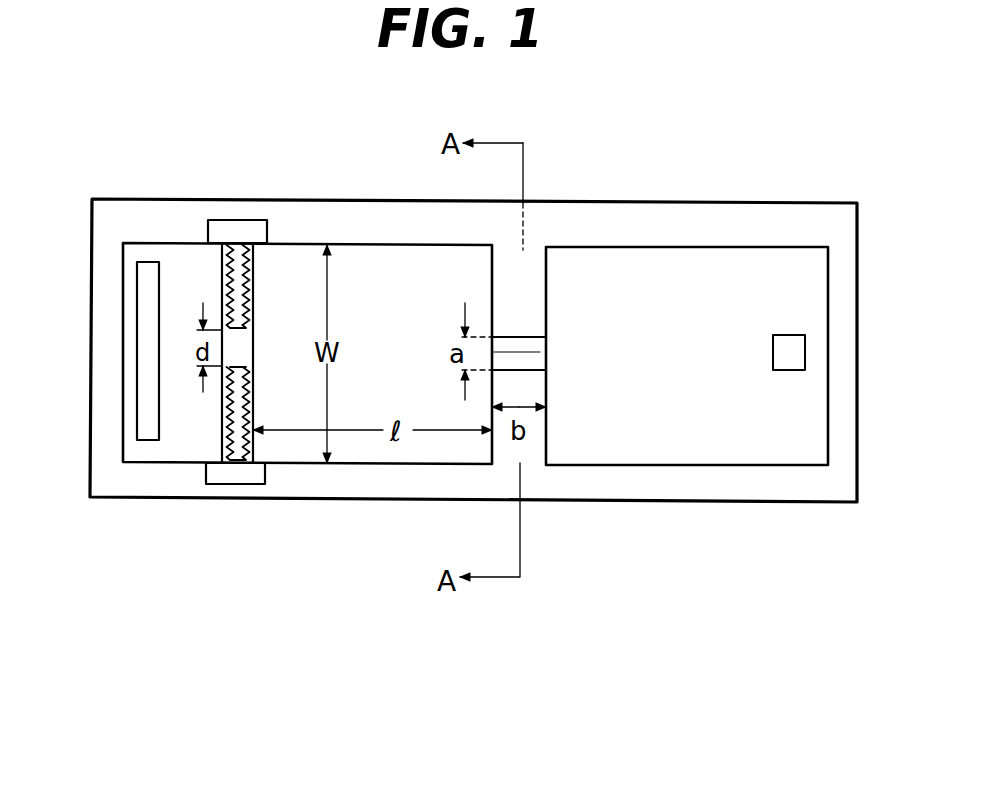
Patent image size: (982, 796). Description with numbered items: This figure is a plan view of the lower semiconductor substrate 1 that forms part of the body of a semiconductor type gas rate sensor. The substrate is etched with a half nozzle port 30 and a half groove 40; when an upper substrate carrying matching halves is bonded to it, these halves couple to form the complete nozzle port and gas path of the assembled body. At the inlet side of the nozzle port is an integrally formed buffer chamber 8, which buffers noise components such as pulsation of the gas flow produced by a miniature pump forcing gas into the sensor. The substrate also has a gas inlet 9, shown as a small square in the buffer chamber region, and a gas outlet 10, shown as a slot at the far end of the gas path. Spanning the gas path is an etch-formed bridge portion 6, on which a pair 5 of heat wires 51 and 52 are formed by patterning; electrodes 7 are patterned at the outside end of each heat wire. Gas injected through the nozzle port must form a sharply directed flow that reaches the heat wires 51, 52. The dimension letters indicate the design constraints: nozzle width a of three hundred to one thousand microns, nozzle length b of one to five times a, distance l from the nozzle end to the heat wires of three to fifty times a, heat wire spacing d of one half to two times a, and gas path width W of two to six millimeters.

The lower semiconductor substrate 1 is at (357, 503).
The pair of heat wires 5 is at (257, 341).
The bridge portion 6 is at (222, 398).
The electrodes 7 is at (238, 222).
The buffer chamber 8 is at (717, 437).
The gas inlet 9 is at (805, 355).
The gas outlet 10 is at (137, 345).
The half nozzle port 30 is at (541, 348).
The half groove 40 is at (380, 267).
The heat wire 51 is at (227, 430).
The heat wire 52 is at (227, 287).